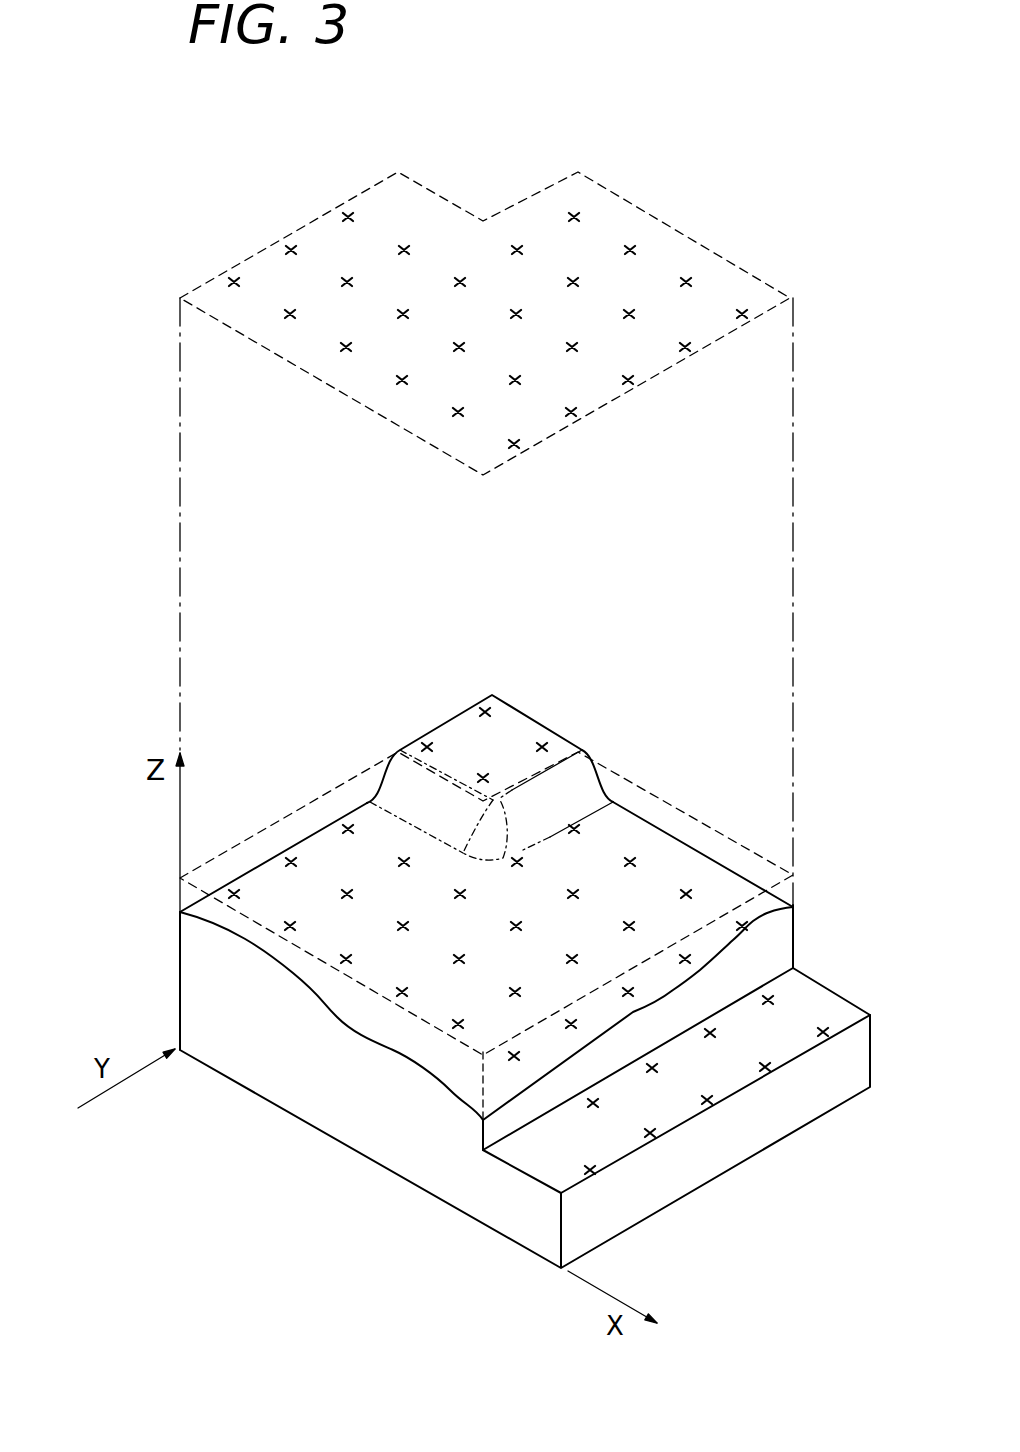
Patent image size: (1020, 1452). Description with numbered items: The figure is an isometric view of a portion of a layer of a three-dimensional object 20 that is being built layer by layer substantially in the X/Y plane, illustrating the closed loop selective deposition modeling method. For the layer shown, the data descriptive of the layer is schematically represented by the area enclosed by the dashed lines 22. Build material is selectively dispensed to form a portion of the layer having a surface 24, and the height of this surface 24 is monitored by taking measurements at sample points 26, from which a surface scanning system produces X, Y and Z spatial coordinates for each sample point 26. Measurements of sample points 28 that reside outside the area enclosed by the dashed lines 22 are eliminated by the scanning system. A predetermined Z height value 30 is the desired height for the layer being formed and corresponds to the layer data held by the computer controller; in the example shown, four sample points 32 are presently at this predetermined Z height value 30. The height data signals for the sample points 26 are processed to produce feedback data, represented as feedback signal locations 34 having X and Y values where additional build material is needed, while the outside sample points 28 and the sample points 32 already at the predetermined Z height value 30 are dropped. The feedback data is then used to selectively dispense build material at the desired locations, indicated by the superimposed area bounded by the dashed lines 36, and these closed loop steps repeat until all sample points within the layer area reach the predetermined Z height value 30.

The three-dimensional object 20 is at (293, 1073).
The dashed lines 22 is at (293, 813).
The surface 24 is at (355, 858).
The sample points 26 is at (686, 888).
The sample points 28 is at (707, 1092).
The predetermined Z height value 30 is at (160, 870).
The sample points 32 is at (428, 747).
The feedback signal locations 34 is at (232, 283).
The dashed lines 36 is at (341, 206).